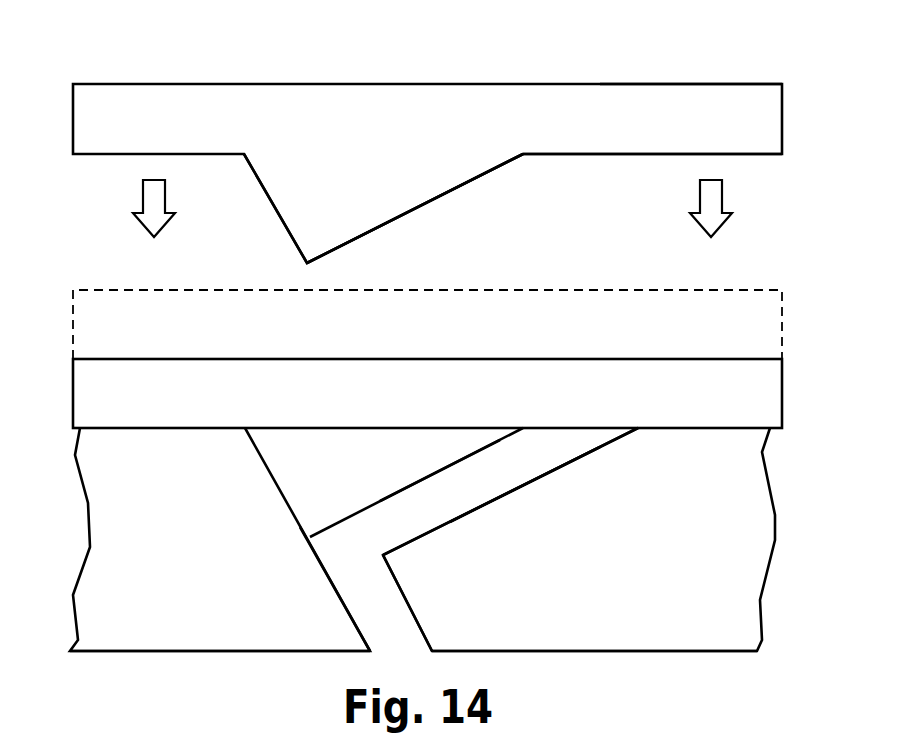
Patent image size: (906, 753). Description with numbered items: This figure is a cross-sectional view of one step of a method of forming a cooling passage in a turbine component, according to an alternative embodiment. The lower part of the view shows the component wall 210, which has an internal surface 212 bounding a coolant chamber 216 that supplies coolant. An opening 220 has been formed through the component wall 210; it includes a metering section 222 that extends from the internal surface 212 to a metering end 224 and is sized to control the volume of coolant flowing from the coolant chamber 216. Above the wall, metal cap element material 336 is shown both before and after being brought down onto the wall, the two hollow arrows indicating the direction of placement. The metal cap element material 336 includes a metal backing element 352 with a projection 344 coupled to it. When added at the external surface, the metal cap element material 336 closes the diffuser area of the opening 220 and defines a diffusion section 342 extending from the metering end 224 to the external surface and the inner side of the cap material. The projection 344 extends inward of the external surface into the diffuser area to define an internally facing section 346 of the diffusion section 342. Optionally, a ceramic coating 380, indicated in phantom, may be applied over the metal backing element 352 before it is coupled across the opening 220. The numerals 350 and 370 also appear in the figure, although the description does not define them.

The metal cap element material 336 is at (450, 61).
The protrusion of forming tool 350 is at (303, 99).
The metal backing element 352 is at (660, 115).
The ceramic coating 380 is at (706, 69).
The projection 344 is at (398, 174).
The initial tool position (phantom) 370 is at (118, 308).
The component wall 210 is at (718, 552).
The opening 220 is at (600, 453).
The diffusion section 342 is at (505, 483).
The internally facing section 346 is at (422, 480).
The metering end 224 is at (350, 557).
The metering section 222 is at (402, 626).
The internal surface 212 is at (687, 652).
The coolant chamber 216 is at (596, 693).